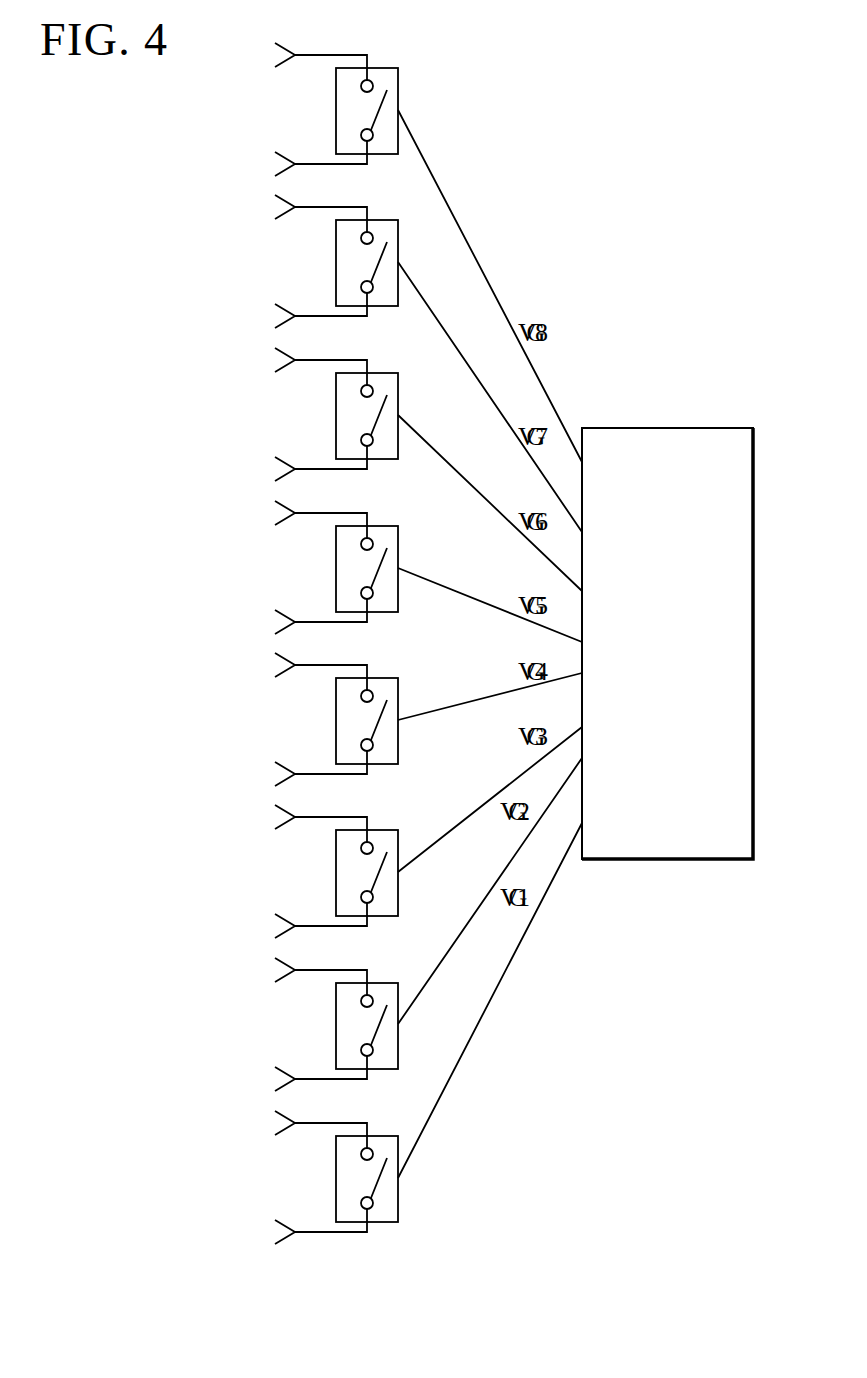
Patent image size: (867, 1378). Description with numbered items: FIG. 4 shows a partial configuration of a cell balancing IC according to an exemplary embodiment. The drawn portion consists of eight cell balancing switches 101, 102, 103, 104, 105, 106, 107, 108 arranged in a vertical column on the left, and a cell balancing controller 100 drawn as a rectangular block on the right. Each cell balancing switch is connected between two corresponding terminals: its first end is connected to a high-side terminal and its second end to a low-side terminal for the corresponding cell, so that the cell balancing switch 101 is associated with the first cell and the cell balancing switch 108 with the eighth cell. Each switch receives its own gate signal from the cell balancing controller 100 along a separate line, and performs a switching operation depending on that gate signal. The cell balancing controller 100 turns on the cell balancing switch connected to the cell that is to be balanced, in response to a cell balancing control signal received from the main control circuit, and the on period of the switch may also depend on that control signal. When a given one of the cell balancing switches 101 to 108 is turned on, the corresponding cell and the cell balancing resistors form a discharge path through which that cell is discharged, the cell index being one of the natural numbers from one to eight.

The cell balancing controller 100 is at (666, 428).
The cell balancing switch 101 is at (392, 1133).
The cell balancing switch 102 is at (392, 980).
The cell balancing switch 103 is at (392, 827).
The cell balancing switch 104 is at (392, 675).
The cell balancing switch 105 is at (392, 523).
The cell balancing switch 106 is at (392, 370).
The cell balancing switch 107 is at (392, 217).
The cell balancing switch 108 is at (392, 65).